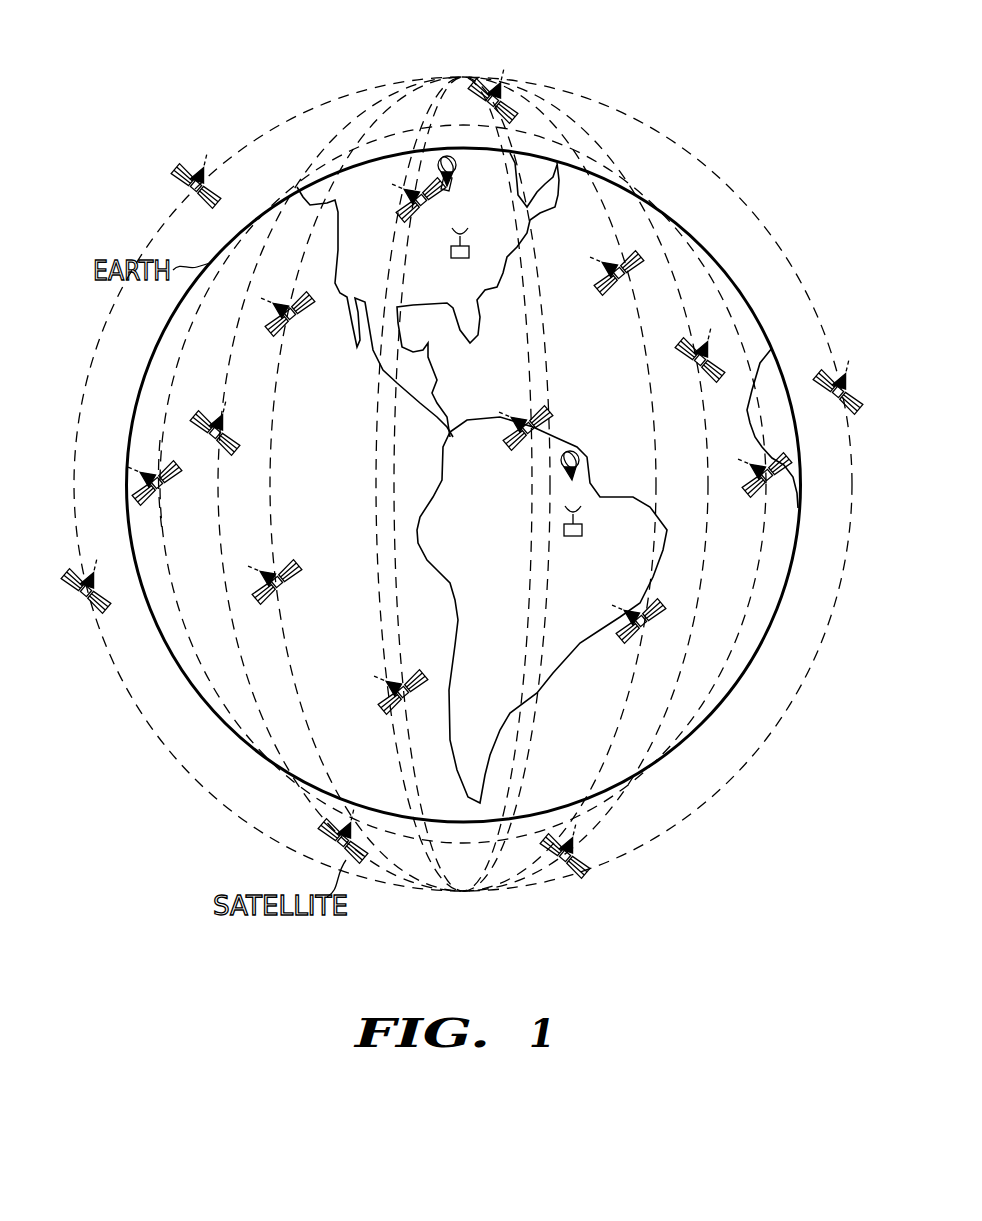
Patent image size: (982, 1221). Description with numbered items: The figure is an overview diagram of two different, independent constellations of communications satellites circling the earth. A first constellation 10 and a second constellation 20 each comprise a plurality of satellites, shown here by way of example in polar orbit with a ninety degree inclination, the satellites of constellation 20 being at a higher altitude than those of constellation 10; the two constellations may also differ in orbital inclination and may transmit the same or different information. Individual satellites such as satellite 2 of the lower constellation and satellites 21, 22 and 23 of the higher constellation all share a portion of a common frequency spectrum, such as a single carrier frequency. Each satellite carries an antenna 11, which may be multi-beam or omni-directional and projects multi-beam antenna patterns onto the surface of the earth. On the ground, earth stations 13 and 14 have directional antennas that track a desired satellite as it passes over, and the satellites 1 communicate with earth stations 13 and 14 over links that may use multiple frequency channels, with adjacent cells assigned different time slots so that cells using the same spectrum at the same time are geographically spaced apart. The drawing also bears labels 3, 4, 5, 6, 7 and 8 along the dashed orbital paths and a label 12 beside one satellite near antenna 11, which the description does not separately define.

The satellites 1 is at (651, 641).
The satellite 2 is at (606, 294).
The orbital plane 3 is at (162, 513).
The orbital plane 4 is at (273, 466).
The orbital plane 5 is at (397, 466).
The orbital plane 6 is at (530, 548).
The orbital plane 7 is at (650, 560).
The orbital plane 8 is at (756, 596).
The first constellation 10 is at (456, 114).
The satellite antenna 11 is at (267, 565).
The satellite solar panel 12 is at (285, 597).
The earth station 13 is at (461, 259).
The earth station 14 is at (583, 531).
The second constellation 20 is at (458, 64).
The satellite 21 is at (183, 171).
The satellite 22 is at (78, 606).
The satellite 23 is at (489, 86).